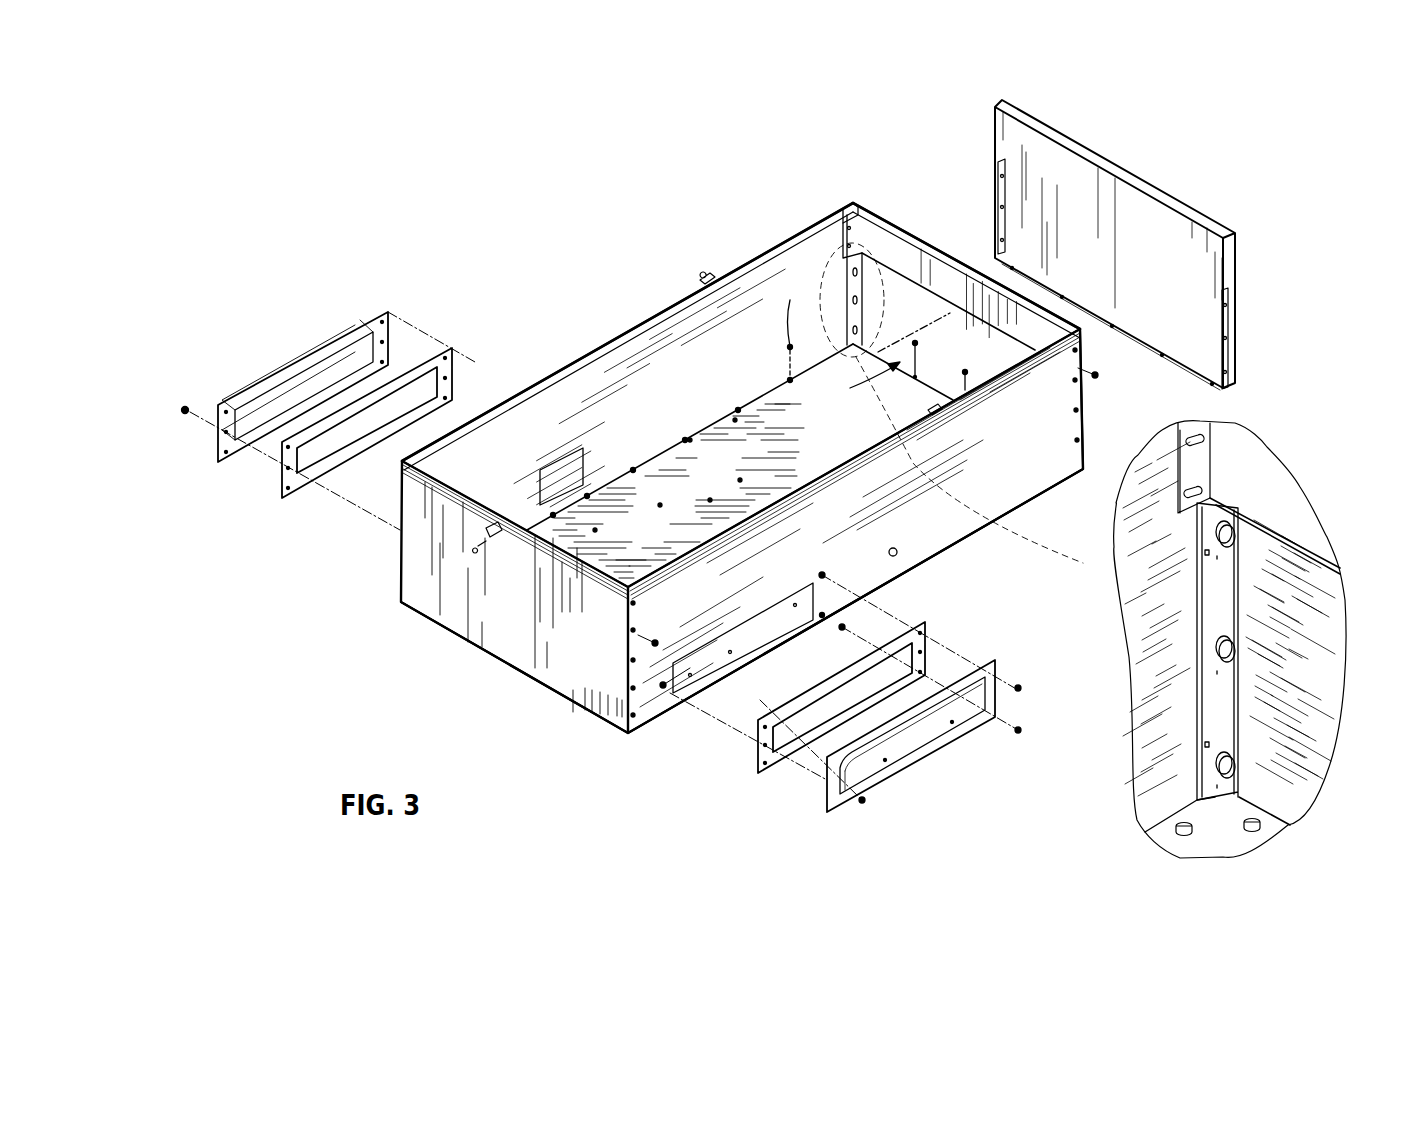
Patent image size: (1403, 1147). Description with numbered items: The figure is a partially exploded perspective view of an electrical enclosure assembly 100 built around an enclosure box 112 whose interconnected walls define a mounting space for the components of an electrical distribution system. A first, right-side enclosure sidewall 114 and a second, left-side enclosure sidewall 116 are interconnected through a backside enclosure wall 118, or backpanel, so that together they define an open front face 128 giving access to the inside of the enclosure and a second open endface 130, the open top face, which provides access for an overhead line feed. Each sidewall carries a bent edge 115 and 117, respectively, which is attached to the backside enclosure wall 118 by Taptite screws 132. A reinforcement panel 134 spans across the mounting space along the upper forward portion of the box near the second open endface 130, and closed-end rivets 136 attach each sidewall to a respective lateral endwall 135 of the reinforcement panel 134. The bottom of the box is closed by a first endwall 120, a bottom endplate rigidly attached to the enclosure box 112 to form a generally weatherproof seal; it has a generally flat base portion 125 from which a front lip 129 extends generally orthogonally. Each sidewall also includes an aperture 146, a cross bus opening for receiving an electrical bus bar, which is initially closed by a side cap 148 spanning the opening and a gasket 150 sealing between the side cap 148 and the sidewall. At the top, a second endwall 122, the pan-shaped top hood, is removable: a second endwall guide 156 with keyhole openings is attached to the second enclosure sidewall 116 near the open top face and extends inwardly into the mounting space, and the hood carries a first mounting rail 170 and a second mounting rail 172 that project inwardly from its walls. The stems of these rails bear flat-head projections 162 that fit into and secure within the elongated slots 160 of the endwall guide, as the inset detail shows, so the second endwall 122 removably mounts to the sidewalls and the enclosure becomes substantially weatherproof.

The electrical enclosure assembly 100 is at (548, 184).
The enclosure box 112 is at (846, 201).
The first enclosure sidewall 114 is at (826, 480).
The bent edge 115 is at (614, 731).
The second enclosure sidewall 116 is at (605, 355).
The bent edge 117 is at (400, 606).
The backside enclosure wall 118 is at (713, 427).
The first endwall 120 is at (476, 490).
The second endwall 122 is at (1142, 185).
The base portion 125 is at (410, 555).
The open front face 128 is at (746, 266).
The front lip 129 is at (601, 573).
The second open endface 130 is at (946, 403).
The Taptite screws 132 is at (869, 332).
The reinforcement panel 134 is at (895, 233).
The lateral endwall 135 is at (868, 233).
The closed-end rivets 136 is at (623, 660).
The aperture 146 is at (580, 465).
The side cap 148 is at (366, 318).
The gasket 150 is at (440, 346).
The second endwall guide 156 is at (846, 278).
The elongated slots 160 is at (1216, 555).
The flat-head projections 162 is at (1216, 533).
The first mounting rail 170 is at (1220, 303).
The second mounting rail 172 is at (998, 185).